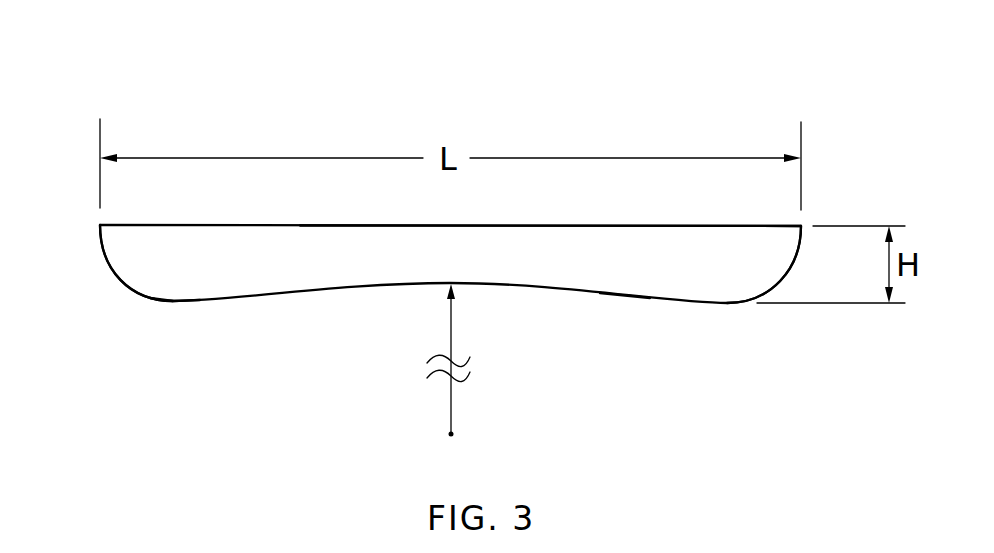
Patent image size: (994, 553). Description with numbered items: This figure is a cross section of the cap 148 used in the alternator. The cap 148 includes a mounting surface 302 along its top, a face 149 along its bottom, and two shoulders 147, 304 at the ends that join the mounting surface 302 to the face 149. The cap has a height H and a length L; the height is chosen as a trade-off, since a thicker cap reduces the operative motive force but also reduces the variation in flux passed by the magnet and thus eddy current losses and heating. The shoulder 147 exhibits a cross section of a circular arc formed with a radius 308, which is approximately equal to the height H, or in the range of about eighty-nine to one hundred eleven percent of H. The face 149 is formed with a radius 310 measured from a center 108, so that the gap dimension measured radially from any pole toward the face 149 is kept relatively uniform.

The cap 148 is at (208, 40).
The mounting surface 302 is at (708, 225).
The shoulder 304 is at (795, 260).
The radius 308 is at (127, 276).
The shoulder 147 is at (148, 297).
The face 149 is at (628, 292).
The radius 310 is at (452, 334).
The center 108 is at (453, 434).